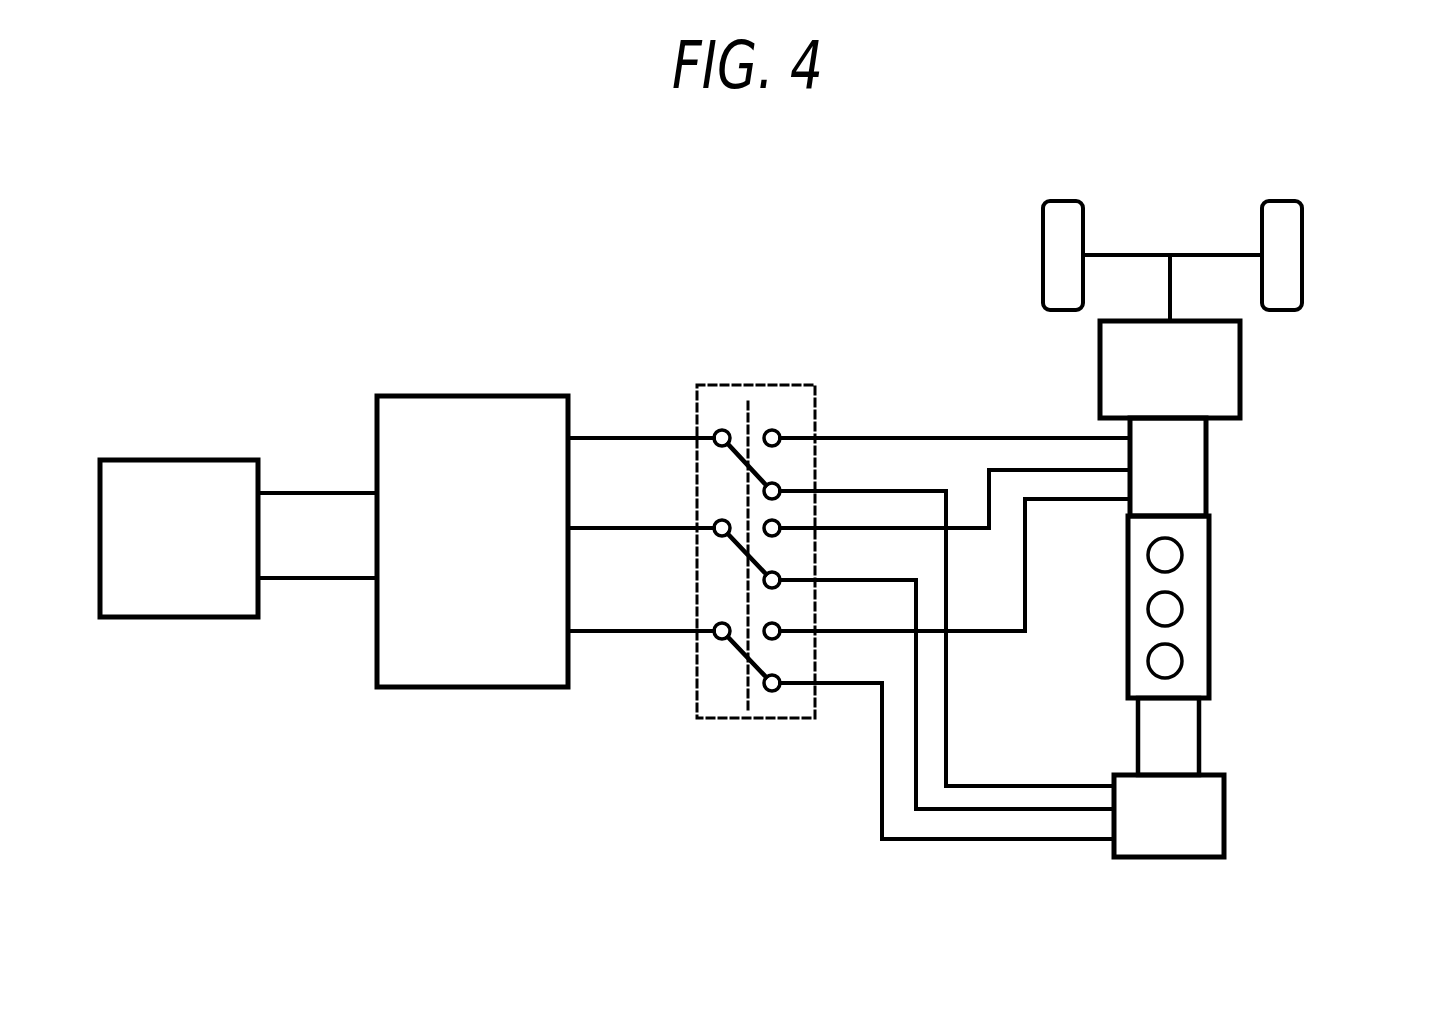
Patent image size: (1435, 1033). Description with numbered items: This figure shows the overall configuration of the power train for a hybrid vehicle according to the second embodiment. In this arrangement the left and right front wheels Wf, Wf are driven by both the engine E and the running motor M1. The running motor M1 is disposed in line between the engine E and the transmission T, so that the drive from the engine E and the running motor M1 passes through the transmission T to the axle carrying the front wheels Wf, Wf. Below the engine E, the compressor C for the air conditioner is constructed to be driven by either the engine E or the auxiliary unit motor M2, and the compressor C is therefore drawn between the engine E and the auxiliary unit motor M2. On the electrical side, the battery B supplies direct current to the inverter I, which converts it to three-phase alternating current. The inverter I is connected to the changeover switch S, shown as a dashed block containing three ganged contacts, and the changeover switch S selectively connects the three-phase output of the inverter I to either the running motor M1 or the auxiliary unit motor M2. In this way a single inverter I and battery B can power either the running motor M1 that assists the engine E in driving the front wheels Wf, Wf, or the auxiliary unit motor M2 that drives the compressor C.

The battery B is at (178, 460).
The inverter I is at (472, 396).
The changeover switch S is at (754, 385).
The front wheel Wf is at (1043, 252).
The transmission T is at (1240, 370).
The running motor M1 is at (1206, 455).
The engine E is at (1209, 603).
The compressor C is at (1199, 736).
The auxiliary unit motor M2 is at (1224, 812).